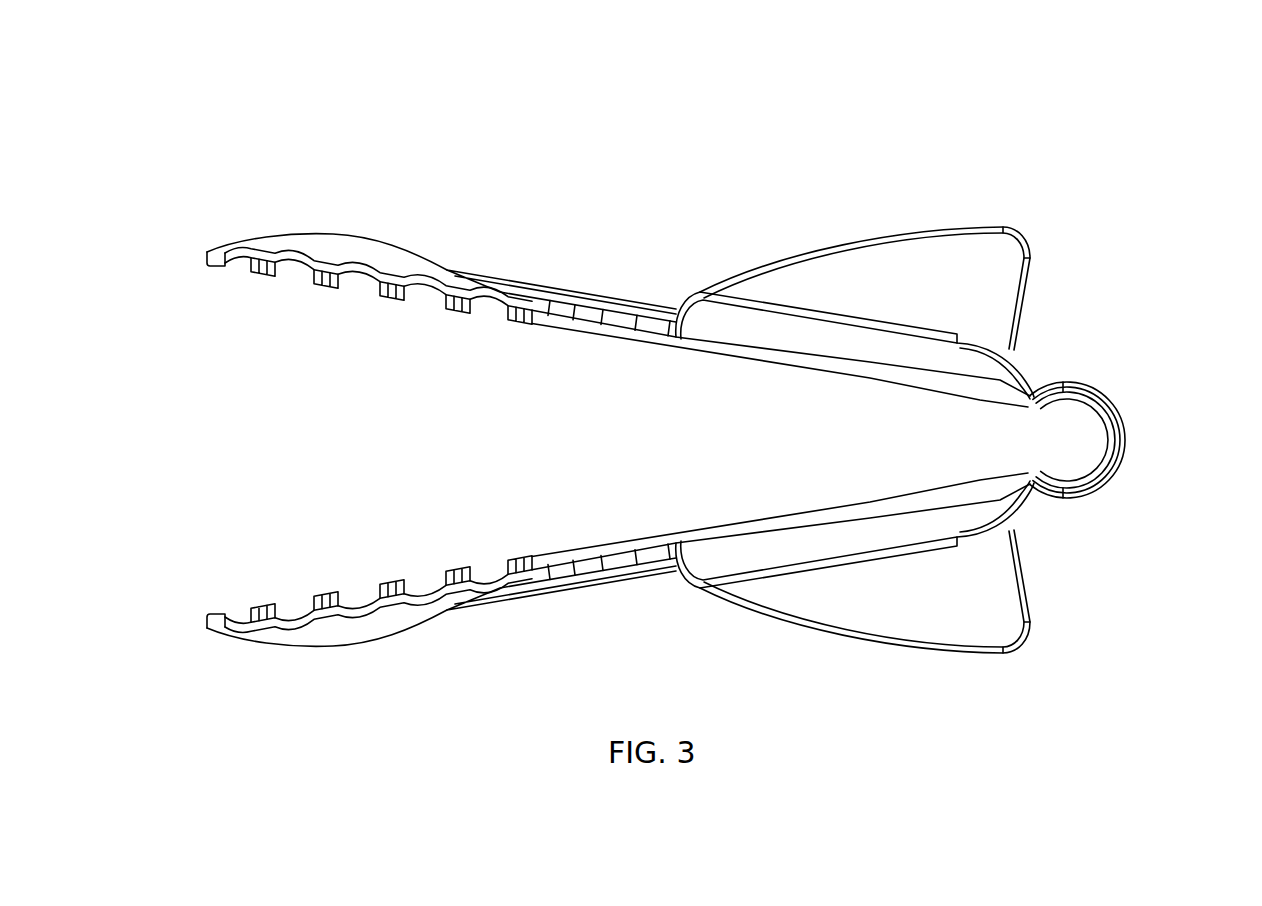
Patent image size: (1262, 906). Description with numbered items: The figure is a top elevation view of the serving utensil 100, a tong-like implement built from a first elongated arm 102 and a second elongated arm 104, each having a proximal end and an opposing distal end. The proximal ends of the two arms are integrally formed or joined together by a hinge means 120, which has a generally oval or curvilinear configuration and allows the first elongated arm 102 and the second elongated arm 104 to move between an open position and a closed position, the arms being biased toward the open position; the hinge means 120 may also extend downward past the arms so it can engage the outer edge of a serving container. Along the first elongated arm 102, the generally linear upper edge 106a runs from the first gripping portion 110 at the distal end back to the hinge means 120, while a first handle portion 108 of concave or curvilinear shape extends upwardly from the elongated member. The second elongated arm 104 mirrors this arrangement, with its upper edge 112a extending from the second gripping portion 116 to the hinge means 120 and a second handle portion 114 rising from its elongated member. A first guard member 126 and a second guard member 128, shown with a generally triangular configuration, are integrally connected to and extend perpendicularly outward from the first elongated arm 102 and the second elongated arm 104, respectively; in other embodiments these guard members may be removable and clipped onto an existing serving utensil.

The serving utensil 100 is at (930, 110).
The first elongated arm 102 is at (562, 343).
The second elongated arm 104 is at (553, 533).
The upper edge 106a is at (570, 318).
The first handle portion 108 is at (745, 318).
The first gripping portion 110 is at (328, 248).
The upper edge 112a is at (588, 552).
The second handle portion 114 is at (758, 558).
The second gripping portion 116 is at (322, 630).
The hinge means 120 is at (1117, 445).
The first guard member 126 is at (880, 257).
The second guard member 128 is at (970, 635).